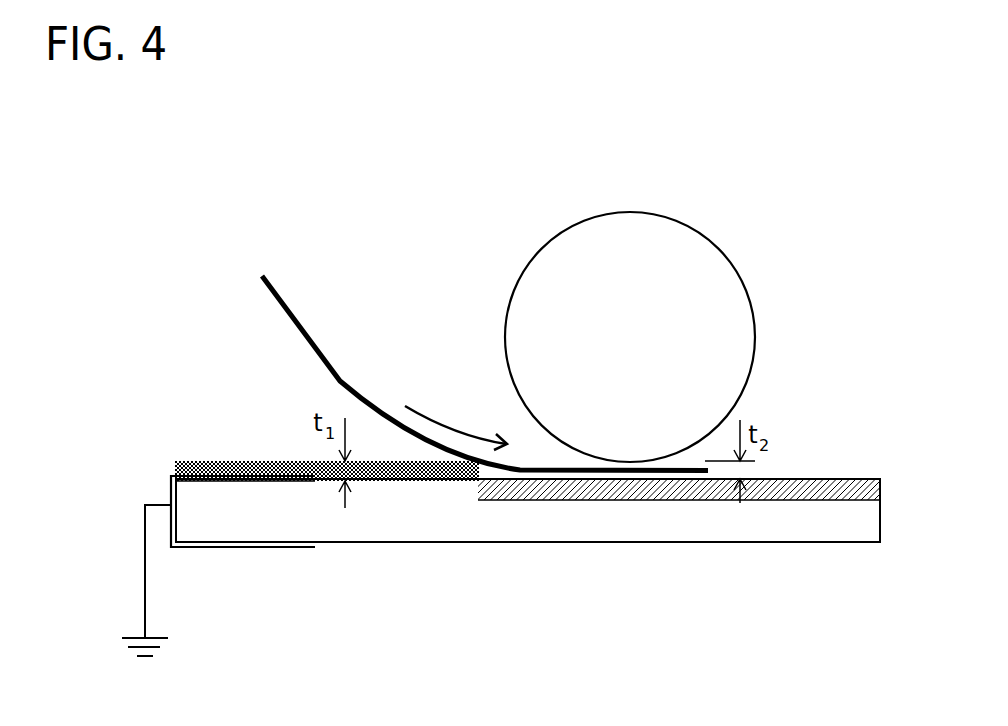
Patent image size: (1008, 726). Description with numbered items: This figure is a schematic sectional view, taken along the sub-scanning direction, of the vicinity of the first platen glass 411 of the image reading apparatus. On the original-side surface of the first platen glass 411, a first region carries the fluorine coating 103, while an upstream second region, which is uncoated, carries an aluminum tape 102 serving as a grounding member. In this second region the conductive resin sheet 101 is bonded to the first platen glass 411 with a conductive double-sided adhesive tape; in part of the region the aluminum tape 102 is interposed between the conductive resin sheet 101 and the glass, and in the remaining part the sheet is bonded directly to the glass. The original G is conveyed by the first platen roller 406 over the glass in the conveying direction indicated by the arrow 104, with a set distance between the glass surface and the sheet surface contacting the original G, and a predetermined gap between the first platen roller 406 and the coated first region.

The conductive resin sheet 101 is at (209, 457).
The aluminum tape 102 is at (229, 539).
The fluorine coating 103 is at (812, 471).
The movement direction of blade 104 is at (442, 420).
The first platen roller 406 is at (675, 252).
The first platen glass 411 is at (754, 520).
The original G is at (287, 310).